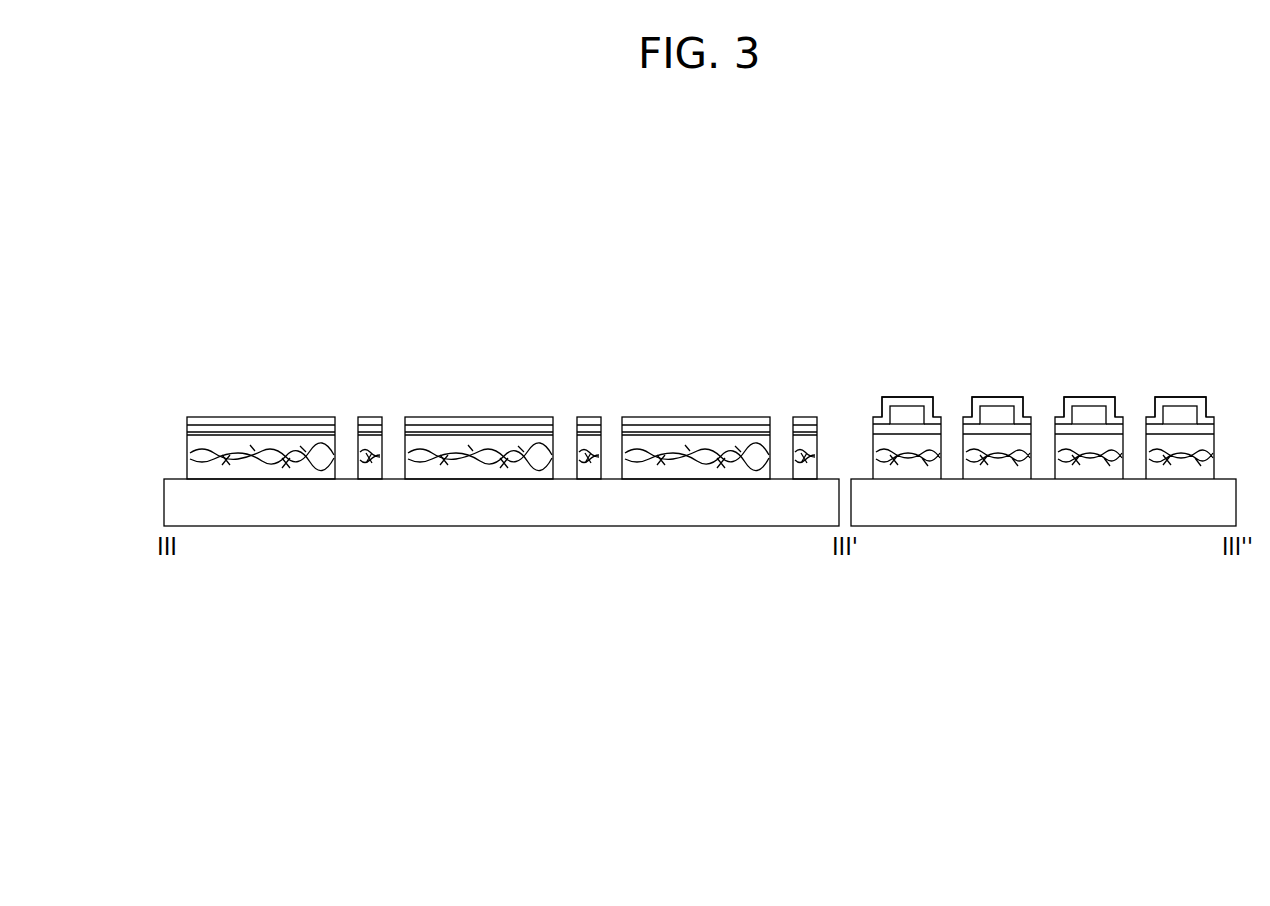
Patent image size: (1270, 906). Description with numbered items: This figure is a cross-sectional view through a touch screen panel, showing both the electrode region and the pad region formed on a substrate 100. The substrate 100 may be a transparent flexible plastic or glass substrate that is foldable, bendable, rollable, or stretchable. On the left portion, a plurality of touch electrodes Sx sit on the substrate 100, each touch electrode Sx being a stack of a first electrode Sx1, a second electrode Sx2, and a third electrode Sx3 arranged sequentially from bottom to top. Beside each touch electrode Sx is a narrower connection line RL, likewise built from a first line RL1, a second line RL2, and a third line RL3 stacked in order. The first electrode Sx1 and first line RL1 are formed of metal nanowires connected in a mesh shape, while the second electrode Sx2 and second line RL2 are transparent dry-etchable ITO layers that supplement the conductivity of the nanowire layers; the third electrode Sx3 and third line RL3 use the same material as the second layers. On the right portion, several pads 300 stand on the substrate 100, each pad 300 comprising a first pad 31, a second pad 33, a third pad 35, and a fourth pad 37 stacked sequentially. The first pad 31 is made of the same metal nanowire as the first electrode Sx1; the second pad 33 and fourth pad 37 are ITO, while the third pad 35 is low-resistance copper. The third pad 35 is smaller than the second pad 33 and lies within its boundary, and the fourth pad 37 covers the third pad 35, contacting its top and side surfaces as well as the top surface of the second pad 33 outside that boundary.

The substrate 100 is at (585, 510).
The touch electrode Sx is at (313, 577).
The first electrode Sx1 is at (230, 473).
The second electrode Sx2 is at (262, 430).
The third electrode Sx3 is at (292, 420).
The connection line RL is at (420, 363).
The first line RL1 is at (363, 443).
The second line RL2 is at (368, 432).
The third line RL3 is at (375, 420).
The pad 300 is at (1050, 345).
The first pad 31 is at (977, 442).
The second pad 33 is at (985, 432).
The third pad 35 is at (997, 417).
The fourth pad 37 is at (1020, 415).